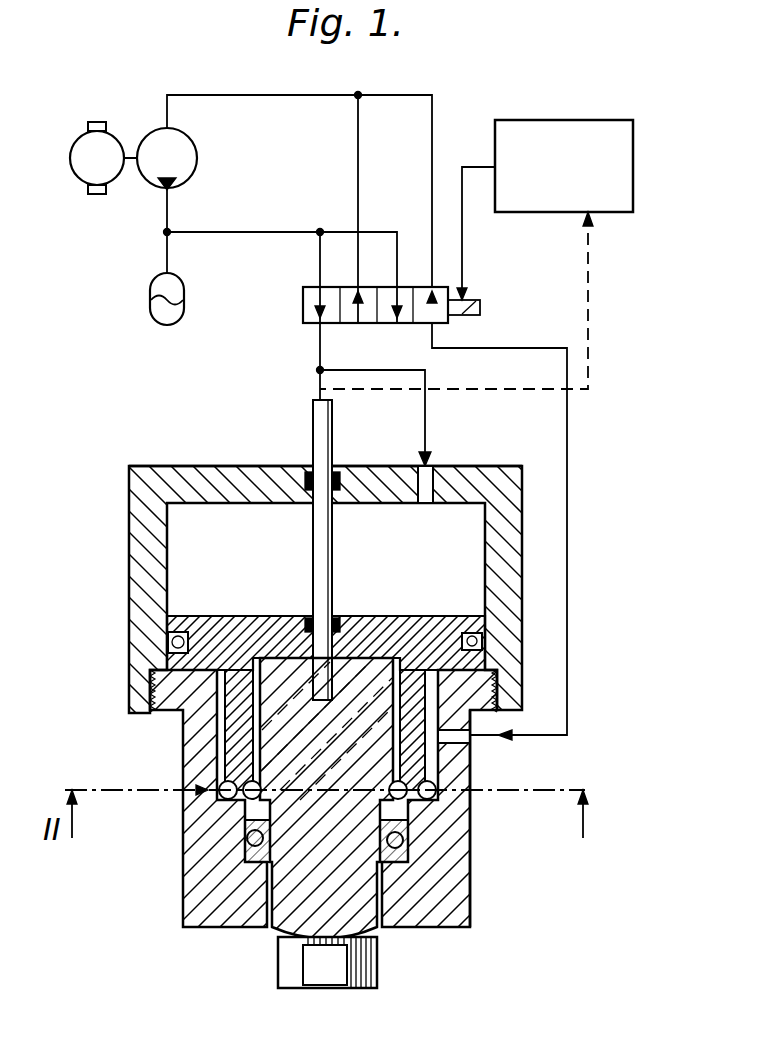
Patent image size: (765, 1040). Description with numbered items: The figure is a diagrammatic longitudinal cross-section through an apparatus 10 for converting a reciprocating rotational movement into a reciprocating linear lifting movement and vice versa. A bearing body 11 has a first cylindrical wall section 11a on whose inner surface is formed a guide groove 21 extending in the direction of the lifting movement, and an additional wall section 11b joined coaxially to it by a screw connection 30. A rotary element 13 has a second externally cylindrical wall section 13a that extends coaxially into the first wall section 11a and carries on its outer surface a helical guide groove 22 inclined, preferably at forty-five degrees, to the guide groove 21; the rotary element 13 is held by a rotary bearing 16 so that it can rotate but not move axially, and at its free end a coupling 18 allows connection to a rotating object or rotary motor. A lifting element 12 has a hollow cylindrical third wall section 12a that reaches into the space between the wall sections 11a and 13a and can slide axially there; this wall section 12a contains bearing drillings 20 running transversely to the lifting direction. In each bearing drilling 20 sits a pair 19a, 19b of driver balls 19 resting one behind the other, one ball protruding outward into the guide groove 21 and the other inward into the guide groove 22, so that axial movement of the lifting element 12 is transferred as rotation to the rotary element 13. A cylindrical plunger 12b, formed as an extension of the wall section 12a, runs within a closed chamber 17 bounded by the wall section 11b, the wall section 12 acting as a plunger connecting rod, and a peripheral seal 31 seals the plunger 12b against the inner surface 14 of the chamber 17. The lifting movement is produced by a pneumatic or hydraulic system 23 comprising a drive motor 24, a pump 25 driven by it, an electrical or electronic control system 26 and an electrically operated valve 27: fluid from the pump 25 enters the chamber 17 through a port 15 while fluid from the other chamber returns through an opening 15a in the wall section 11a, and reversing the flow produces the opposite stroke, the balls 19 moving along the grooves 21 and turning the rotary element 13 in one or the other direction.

The apparatus 10 is at (126, 556).
The bearing body 11 is at (182, 919).
The first cylindrical wall section 11a is at (215, 780).
The additional wall section 11b is at (130, 490).
The lifting element 12 is at (188, 611).
The third wall section 12a is at (472, 782).
The plunger 12b is at (490, 625).
The rotary element 13 is at (300, 900).
The second externally cylindrical wall section 13a is at (255, 705).
The inner surface of the chamber 14 is at (483, 572).
The port 15 is at (431, 484).
The opening 15a is at (440, 745).
The rotary bearing 16 is at (402, 842).
The closed chamber 17 is at (472, 517).
The coupling 18 is at (330, 975).
The driver balls 19 is at (243, 828).
The first pair of driver balls 19a is at (225, 796).
The second pair of driver balls 19b is at (440, 792).
The bearing drilling 20 is at (245, 862).
The guide groove 21 is at (240, 762).
The helical guide groove 22 is at (343, 690).
The pneumatic or hydraulic system 23 is at (295, 330).
The drive motor 24 is at (80, 143).
The pump 25 is at (152, 143).
The electrical or electronic control system 26 is at (533, 142).
The electrically operated valve 27 is at (318, 298).
The screw connection 30 is at (150, 690).
The peripheral seal 31 is at (170, 643).